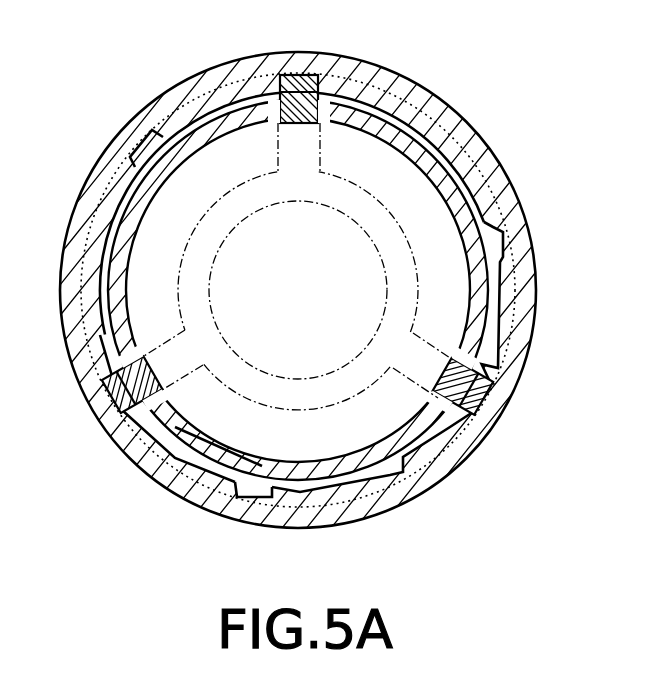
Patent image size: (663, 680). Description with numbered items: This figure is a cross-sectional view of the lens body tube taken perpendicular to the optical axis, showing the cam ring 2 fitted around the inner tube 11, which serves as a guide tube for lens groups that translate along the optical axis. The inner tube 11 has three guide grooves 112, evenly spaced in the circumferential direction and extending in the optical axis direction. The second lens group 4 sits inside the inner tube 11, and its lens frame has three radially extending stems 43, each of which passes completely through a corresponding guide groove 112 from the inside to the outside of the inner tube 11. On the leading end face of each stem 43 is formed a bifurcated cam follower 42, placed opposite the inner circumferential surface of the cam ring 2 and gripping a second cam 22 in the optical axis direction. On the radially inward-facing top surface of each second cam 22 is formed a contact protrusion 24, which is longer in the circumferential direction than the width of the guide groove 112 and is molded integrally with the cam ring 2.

The cam ring 2 is at (483, 137).
The second lens group 4 is at (297, 347).
The inner tube 11 is at (478, 258).
The second cam 22 is at (120, 177).
The contact protrusion 24 is at (407, 132).
The cam follower 42 is at (292, 75).
The stem 43 is at (240, 478).
The guide groove 112 is at (285, 122).